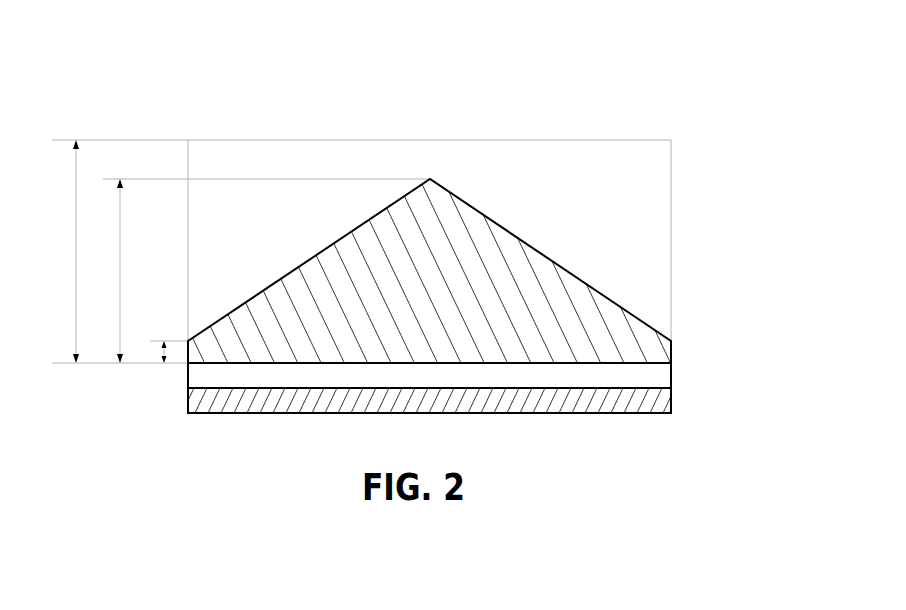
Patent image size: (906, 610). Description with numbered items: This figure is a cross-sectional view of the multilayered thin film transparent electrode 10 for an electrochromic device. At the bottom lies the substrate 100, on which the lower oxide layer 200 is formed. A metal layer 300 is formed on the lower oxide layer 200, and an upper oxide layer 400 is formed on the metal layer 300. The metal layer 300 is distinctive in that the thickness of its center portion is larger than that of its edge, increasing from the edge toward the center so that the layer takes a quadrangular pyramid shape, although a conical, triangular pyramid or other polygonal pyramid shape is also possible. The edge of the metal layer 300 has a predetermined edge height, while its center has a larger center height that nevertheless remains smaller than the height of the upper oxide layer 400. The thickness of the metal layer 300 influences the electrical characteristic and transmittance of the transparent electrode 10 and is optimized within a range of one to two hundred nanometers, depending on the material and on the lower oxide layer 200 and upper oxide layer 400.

The multilayered thin film transparent electrode 10 is at (615, 87).
The substrate 100 is at (672, 400).
The lower oxide layer 200 is at (672, 375).
The metal layer 300 is at (672, 349).
The upper oxide layer 400 is at (671, 238).